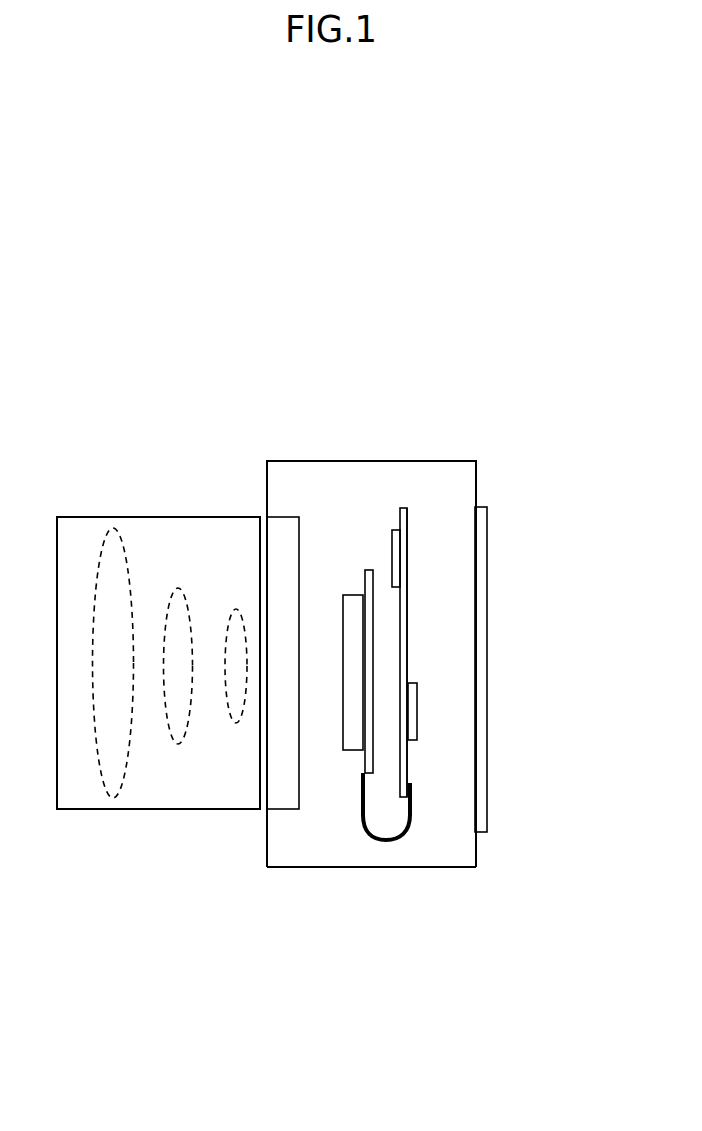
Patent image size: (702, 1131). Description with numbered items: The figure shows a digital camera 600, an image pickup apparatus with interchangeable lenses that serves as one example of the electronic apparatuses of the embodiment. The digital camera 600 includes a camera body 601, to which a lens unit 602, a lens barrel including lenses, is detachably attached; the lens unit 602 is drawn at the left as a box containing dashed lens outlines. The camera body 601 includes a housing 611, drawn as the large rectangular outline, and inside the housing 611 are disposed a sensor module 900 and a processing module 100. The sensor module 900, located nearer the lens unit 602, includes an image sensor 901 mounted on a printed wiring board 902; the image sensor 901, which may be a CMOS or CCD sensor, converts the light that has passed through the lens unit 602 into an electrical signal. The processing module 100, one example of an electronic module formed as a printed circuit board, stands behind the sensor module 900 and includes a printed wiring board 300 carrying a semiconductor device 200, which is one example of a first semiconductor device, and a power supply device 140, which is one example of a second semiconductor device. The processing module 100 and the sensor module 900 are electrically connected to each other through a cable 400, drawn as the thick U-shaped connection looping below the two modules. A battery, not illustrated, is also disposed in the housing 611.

The digital camera 600 is at (311, 314).
The camera body 601 is at (490, 446).
The housing 611 is at (267, 867).
The lens unit 602 is at (93, 517).
The sensor module 900 is at (345, 531).
The image sensor 901 is at (353, 600).
The printed wiring board 902 is at (370, 568).
The processing module 100 is at (401, 495).
The power supply device 140 is at (397, 563).
The printed wiring board 300 is at (408, 617).
The semiconductor device 200 is at (418, 717).
The cable 400 is at (383, 841).